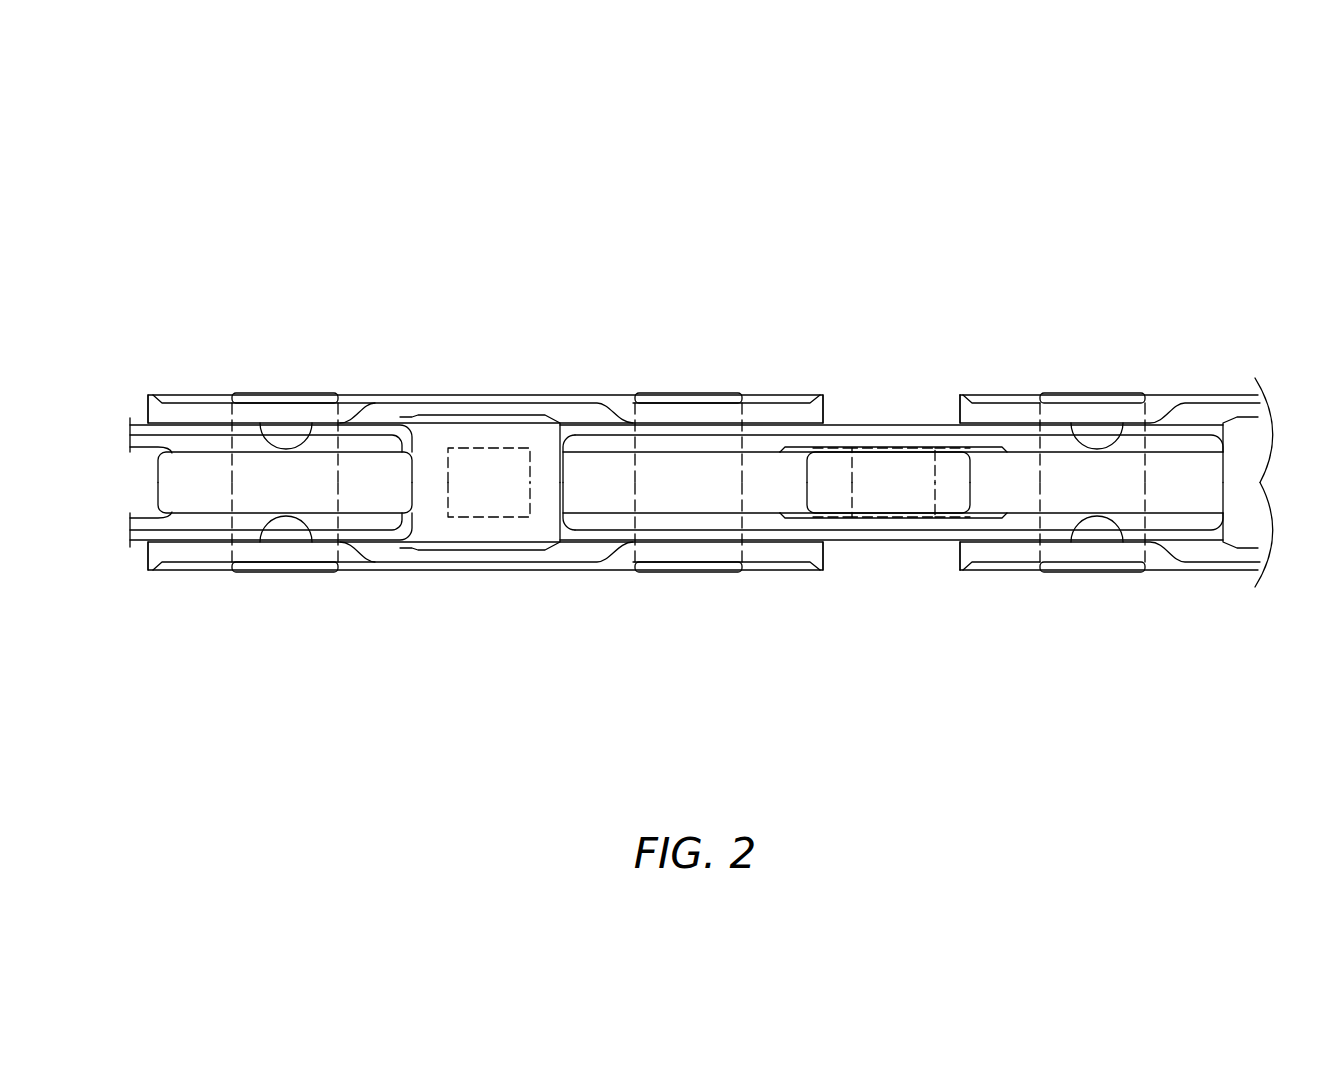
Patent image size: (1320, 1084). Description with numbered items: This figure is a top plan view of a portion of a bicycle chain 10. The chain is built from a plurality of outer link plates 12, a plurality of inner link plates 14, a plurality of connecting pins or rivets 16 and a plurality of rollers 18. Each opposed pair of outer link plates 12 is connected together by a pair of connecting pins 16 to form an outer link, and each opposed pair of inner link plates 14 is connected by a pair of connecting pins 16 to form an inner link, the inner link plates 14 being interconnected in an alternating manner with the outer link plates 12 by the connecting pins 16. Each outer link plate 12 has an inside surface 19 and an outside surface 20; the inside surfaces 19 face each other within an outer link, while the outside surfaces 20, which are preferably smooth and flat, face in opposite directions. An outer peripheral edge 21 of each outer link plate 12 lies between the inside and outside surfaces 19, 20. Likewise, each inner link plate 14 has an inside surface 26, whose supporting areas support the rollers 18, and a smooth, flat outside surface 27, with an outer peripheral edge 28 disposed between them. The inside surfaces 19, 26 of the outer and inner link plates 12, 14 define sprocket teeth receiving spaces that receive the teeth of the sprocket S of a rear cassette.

The bicycle chain 10 is at (752, 276).
The outer link plate 12 is at (470, 372).
The inner link plate 14 is at (898, 402).
The connecting pin 16 is at (230, 467).
The roller 18 is at (255, 468).
The inside surface 19 is at (270, 420).
The outside surface 20 is at (375, 400).
The outer peripheral edge 21 is at (153, 410).
The inside surface 26 is at (762, 452).
The outside surface 27 is at (832, 423).
The outer peripheral edge 28 is at (653, 535).
The sprocket S is at (507, 515).